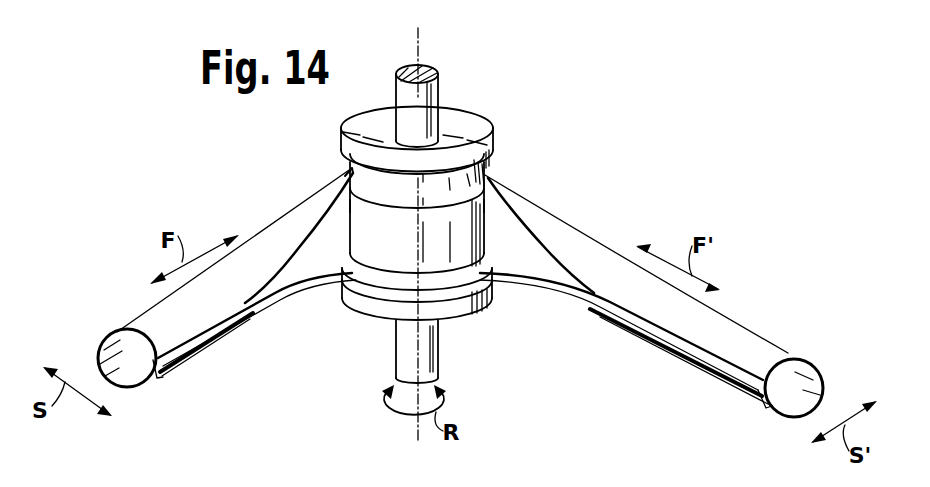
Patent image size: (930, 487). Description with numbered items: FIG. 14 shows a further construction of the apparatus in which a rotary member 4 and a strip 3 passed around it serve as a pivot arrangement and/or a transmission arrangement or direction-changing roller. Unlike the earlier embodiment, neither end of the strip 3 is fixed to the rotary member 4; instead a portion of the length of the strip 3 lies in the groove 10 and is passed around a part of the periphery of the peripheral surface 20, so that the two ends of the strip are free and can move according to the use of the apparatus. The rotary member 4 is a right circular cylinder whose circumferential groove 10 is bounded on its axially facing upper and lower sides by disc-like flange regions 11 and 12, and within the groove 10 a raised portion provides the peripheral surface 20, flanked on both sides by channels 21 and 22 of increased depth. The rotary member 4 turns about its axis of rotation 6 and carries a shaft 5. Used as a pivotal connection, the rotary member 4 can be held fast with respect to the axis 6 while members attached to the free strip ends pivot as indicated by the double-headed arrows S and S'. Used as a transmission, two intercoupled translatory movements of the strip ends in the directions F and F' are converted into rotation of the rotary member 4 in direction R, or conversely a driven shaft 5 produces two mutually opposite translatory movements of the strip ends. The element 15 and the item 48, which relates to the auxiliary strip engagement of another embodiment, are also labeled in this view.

The strip 3 is at (148, 321).
The rotary member 4 is at (458, 118).
The shaft 5 is at (435, 350).
The axis of rotation 6 is at (420, 44).
The groove 10 is at (344, 200).
The flange region 11 is at (497, 160).
The flange region 12 is at (486, 300).
The lower ring 15 is at (360, 283).
The peripheral surface 20 is at (476, 232).
The channel 21 is at (490, 183).
The channel 22 is at (383, 279).
The auxiliary strip engagement 48 is at (320, 250).